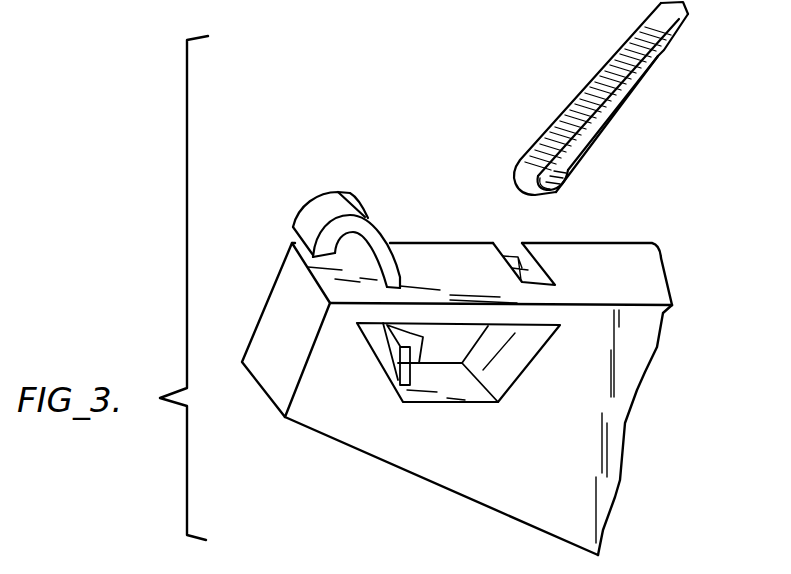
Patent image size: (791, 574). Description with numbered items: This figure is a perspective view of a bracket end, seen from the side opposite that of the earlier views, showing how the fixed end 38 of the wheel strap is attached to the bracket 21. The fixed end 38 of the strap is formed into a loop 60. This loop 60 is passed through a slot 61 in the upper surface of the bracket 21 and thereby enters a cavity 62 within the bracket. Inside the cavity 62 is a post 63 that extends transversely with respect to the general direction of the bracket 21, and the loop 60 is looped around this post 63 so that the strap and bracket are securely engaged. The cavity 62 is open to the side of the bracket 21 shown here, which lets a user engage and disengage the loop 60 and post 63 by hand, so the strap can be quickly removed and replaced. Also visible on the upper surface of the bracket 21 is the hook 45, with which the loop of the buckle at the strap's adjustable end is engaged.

The bracket 21 is at (535, 517).
The fixed end of the wheel strap 38 is at (591, 73).
The hook 45 is at (330, 205).
The loop 60 is at (568, 166).
The slot 61 is at (537, 280).
The cavity 62 is at (497, 367).
The post 63 is at (420, 365).